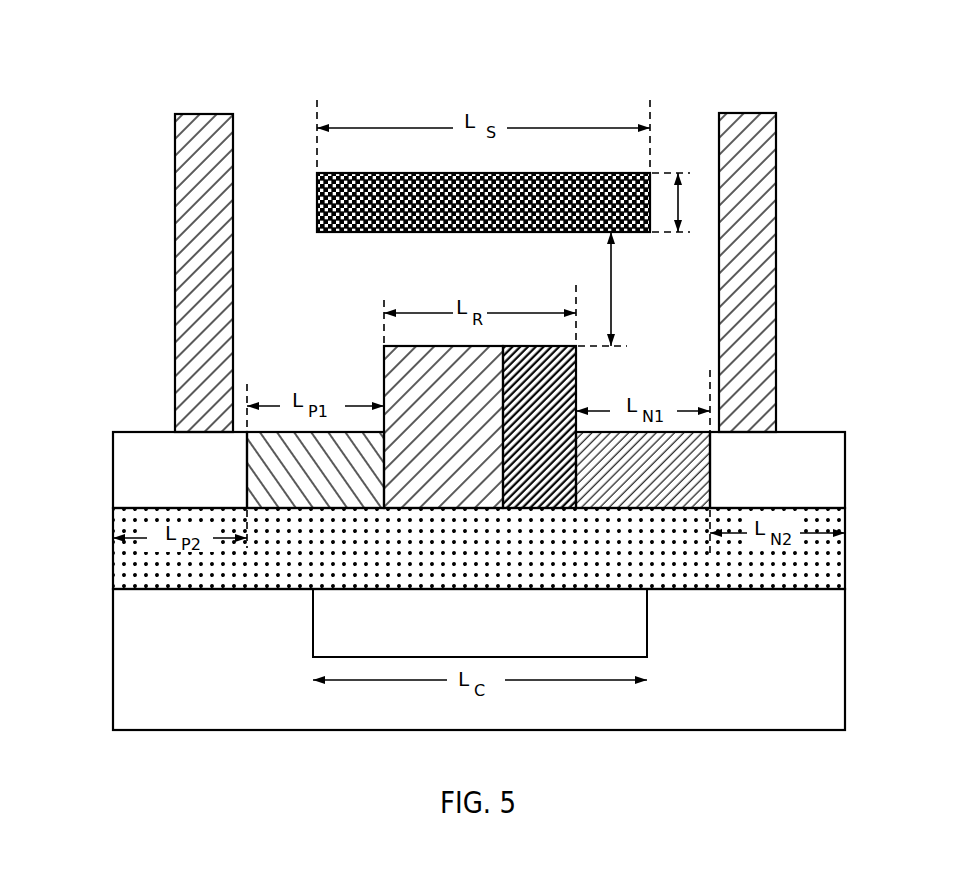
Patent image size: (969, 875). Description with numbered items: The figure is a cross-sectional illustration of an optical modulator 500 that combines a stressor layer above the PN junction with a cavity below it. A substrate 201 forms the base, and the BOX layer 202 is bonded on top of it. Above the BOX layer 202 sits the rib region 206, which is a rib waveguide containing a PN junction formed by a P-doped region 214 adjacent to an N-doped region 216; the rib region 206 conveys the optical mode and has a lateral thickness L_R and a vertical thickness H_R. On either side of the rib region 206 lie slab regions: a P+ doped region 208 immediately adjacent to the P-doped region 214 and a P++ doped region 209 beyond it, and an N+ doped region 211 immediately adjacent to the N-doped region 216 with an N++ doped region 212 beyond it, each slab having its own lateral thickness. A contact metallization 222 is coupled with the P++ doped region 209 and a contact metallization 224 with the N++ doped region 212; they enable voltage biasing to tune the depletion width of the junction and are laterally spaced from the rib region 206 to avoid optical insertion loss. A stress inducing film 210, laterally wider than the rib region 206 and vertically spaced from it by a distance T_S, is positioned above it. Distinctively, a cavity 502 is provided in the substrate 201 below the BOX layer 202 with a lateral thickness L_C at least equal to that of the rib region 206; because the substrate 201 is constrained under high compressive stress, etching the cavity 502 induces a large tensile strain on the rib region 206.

The optical modulator 500 is at (140, 68).
The substrate 201 is at (479, 659).
The BOX layer 202 is at (310, 563).
The rib region 206 is at (480, 462).
The P+ doped region 208 is at (299, 483).
The P++ doped region 209 is at (160, 483).
The stress inducing film 210 is at (471, 216).
The N+ doped region 211 is at (616, 483).
The N++ doped region 212 is at (760, 483).
The P-doped region 214 is at (413, 483).
The N-doped region 216 is at (539, 427).
The contact metallization 222 is at (182, 221).
The contact metallization 224 is at (728, 183).
The cavity 502 is at (460, 631).